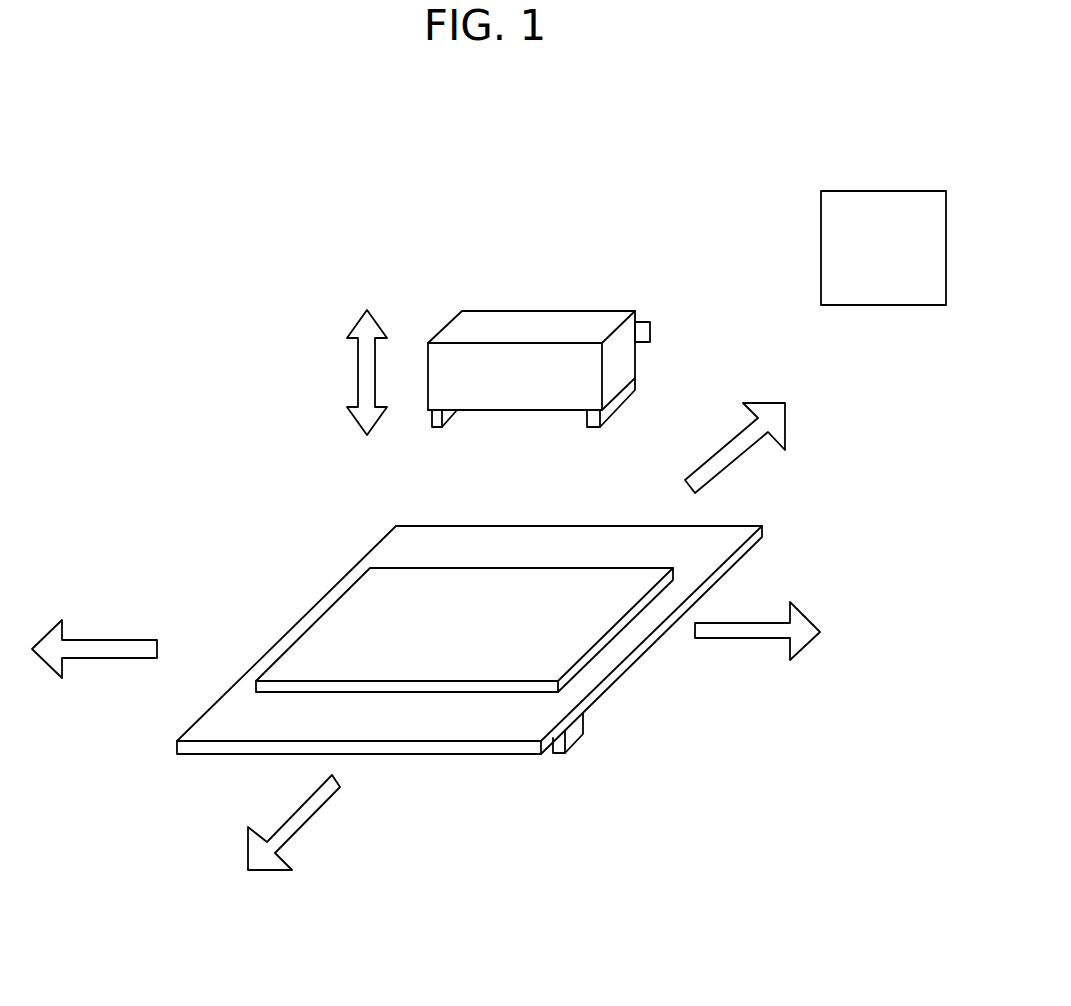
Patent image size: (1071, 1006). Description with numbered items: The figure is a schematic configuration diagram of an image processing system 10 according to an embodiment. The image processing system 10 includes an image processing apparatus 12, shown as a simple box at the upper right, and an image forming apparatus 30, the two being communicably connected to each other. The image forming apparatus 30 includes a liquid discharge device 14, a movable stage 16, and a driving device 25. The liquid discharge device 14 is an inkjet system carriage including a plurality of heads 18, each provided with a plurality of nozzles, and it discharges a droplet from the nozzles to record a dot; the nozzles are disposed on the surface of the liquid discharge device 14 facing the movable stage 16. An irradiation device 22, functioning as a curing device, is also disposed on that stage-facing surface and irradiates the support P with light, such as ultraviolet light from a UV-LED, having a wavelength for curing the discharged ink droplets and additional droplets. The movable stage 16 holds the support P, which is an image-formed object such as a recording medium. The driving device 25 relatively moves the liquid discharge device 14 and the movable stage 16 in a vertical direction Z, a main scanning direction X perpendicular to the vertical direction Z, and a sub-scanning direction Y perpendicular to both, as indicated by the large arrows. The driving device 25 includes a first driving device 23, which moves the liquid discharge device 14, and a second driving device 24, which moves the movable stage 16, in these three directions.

The image processing system 10 is at (212, 155).
The image processing apparatus 12 is at (880, 191).
The liquid discharge device 14 is at (582, 311).
The movable stage 16 is at (499, 724).
The heads 18 is at (493, 413).
The irradiation device 22 is at (618, 410).
The first driving device 23 is at (652, 331).
The second driving device 24 is at (575, 733).
The driving device 25 is at (653, 548).
The image forming apparatus 30 is at (528, 207).
The support P is at (572, 628).
The main scanning direction X is at (97, 658).
The sub-scanning direction Y is at (740, 457).
The vertical direction Z is at (358, 368).